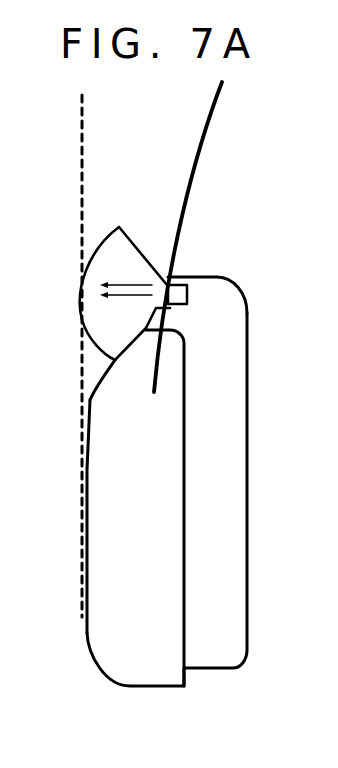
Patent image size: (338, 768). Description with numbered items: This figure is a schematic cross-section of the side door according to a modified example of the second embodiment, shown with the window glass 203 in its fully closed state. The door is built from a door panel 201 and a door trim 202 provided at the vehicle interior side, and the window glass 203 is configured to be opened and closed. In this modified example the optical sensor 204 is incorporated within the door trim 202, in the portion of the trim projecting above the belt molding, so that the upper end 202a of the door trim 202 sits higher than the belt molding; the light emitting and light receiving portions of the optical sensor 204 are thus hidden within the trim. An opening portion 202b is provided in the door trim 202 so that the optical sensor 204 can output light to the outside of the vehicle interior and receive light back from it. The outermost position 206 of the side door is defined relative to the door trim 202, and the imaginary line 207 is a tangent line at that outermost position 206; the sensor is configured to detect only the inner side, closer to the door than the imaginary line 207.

The door panel 201 is at (148, 688).
The door trim 202 is at (247, 466).
The upper end of the door trim 202a is at (212, 275).
The opening portion 202b is at (163, 280).
The window glass 203 is at (199, 158).
The optical sensor 204 is at (173, 286).
The outermost position 206 is at (86, 508).
The imaginary line 207 is at (83, 114).